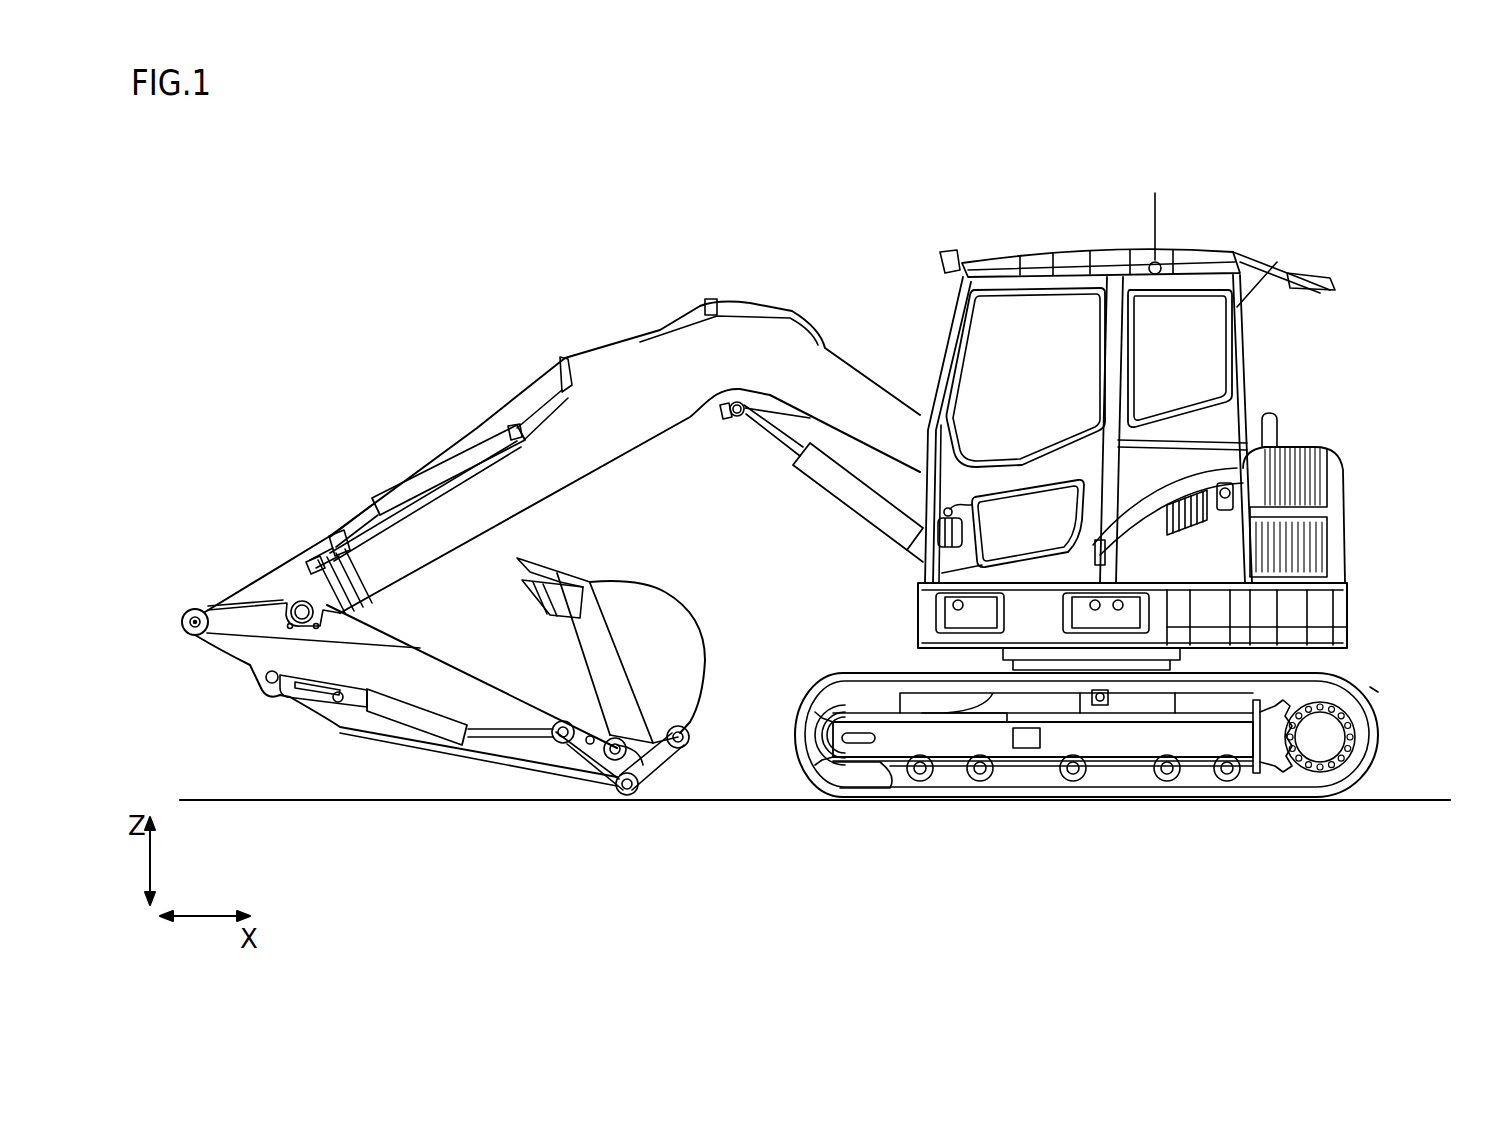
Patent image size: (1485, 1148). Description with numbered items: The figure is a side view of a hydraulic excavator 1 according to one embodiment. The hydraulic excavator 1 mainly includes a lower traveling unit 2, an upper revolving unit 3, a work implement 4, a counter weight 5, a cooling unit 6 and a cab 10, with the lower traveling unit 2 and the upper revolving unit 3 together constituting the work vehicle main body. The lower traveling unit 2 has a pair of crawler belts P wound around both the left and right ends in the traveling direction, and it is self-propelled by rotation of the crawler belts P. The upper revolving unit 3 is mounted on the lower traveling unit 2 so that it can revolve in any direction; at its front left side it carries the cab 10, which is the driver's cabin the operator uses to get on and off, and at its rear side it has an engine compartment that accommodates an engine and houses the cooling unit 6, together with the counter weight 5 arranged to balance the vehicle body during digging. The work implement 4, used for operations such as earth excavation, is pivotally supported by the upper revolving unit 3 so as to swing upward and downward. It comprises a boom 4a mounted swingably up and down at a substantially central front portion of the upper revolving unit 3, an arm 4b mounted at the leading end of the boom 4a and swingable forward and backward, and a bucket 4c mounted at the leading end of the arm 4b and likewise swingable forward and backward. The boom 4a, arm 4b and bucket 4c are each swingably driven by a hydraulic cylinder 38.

The hydraulic excavator 1 is at (1298, 170).
The lower traveling unit 2 is at (792, 748).
The upper revolving unit 3 is at (920, 612).
The work implement 4 is at (735, 278).
The boom 4a is at (520, 473).
The arm 4b is at (372, 668).
The bucket 4c is at (653, 615).
The counter weight 5 is at (1347, 585).
The cooling unit 6 is at (1335, 492).
The cab 10 is at (943, 226).
The hydraulic cylinder 38 is at (403, 485).
The crawler belt P is at (1370, 687).